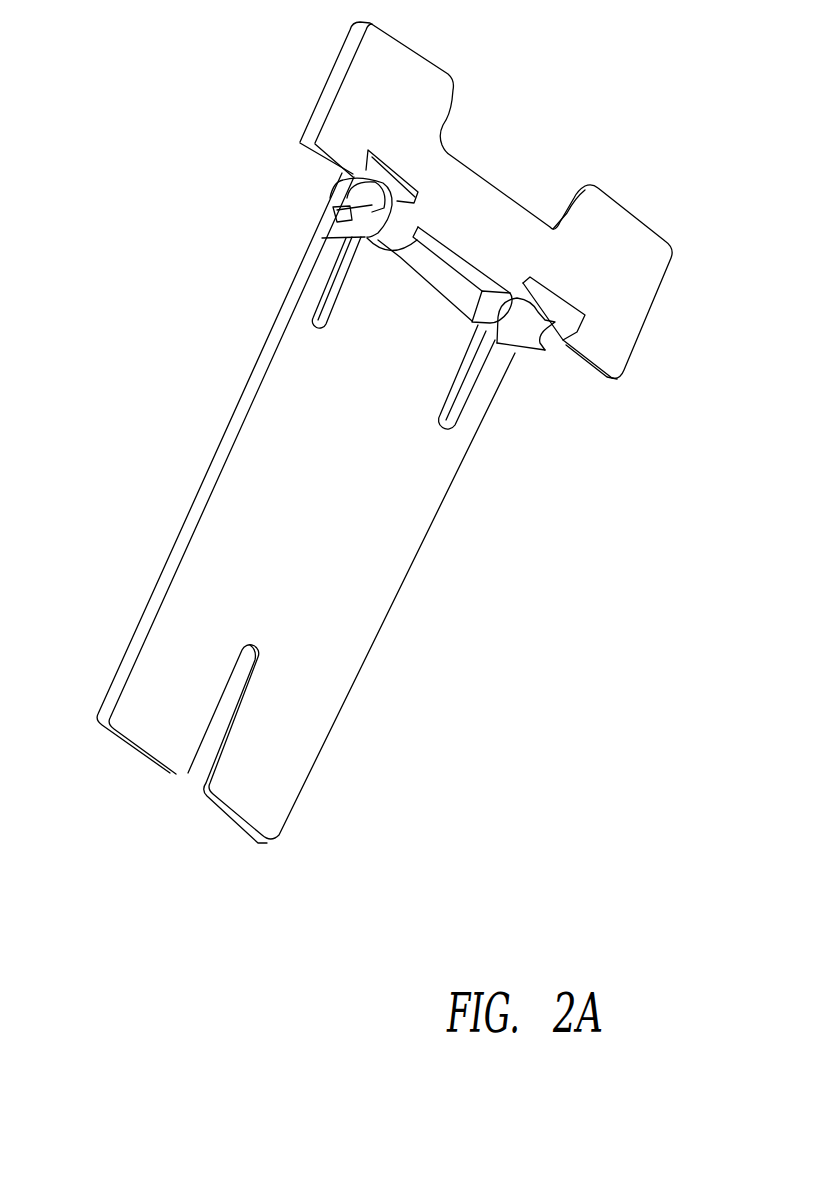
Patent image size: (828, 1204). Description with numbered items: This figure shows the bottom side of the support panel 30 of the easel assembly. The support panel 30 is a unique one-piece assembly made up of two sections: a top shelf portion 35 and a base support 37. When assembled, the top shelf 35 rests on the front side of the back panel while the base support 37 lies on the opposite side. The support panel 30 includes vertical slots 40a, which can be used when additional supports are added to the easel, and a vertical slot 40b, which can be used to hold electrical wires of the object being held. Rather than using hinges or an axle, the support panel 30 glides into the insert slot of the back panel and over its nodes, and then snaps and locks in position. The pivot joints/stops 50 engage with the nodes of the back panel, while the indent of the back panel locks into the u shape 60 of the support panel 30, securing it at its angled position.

The support panel 30 is at (156, 160).
The top shelf portion 35 is at (650, 312).
The base support 37 is at (365, 608).
The vertical slots 40a is at (328, 313).
The vertical slot 40b is at (195, 776).
The pivot joints/stops 50 is at (328, 239).
The u shape 60 is at (457, 270).